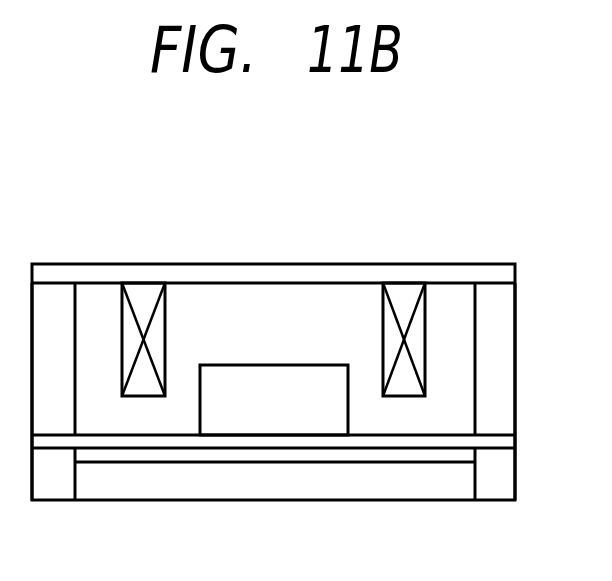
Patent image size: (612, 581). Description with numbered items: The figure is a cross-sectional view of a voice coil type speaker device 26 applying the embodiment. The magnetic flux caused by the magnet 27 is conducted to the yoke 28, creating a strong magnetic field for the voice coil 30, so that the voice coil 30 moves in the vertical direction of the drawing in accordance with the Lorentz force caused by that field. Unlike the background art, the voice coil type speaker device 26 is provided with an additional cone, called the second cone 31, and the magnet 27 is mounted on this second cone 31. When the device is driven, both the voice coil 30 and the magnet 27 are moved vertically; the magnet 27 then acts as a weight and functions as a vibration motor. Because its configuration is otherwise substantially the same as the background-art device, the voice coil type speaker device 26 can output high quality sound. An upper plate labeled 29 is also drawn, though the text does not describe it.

The voice coil type speaker device 26 is at (466, 212).
The magnet 27 is at (247, 405).
The yoke 28 is at (495, 332).
The top plate 29 is at (290, 276).
The voice coil 30 is at (407, 300).
The second cone 31 is at (358, 445).